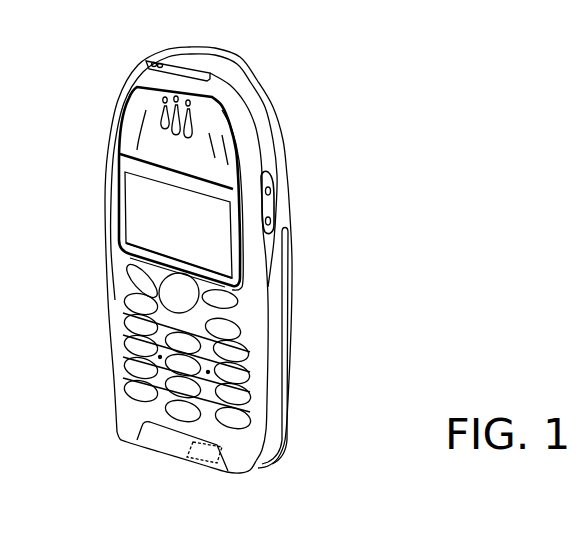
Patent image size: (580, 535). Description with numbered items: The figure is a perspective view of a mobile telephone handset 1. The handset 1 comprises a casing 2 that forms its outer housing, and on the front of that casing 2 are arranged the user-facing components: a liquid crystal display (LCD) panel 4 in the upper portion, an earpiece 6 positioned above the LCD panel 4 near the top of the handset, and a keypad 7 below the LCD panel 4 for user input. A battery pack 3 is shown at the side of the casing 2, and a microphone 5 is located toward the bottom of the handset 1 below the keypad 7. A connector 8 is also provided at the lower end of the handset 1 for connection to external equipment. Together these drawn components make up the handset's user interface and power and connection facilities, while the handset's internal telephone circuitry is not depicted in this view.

The mobile telephone handset 1 is at (390, 96).
The casing 2 is at (278, 203).
The battery pack 3 is at (283, 340).
The liquid crystal display (LCD) panel 4 is at (170, 210).
The microphone 5 is at (177, 450).
The earpiece 6 is at (168, 110).
The keypad 7 is at (177, 360).
The connector 8 is at (203, 463).